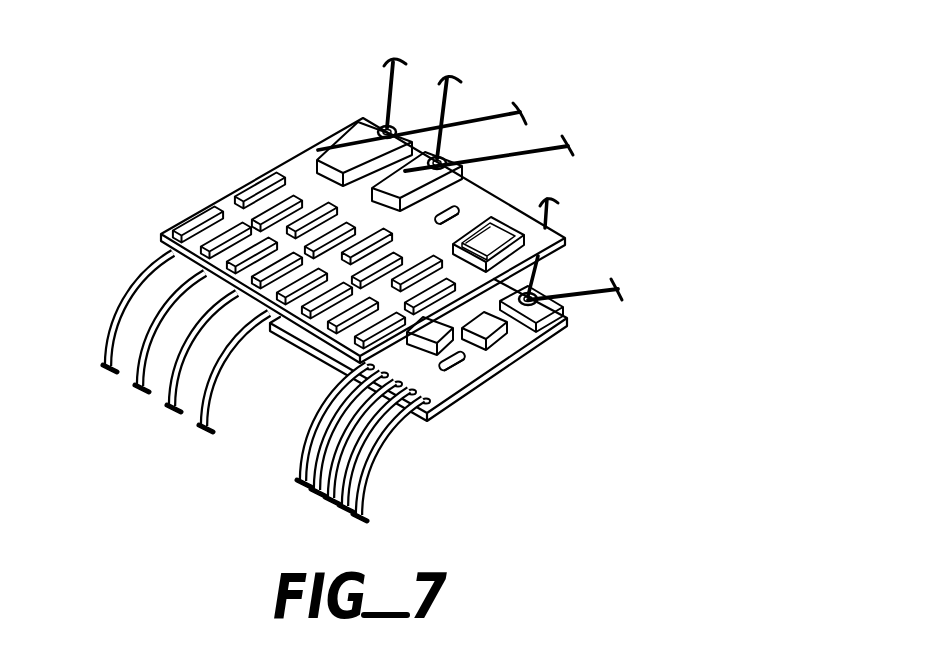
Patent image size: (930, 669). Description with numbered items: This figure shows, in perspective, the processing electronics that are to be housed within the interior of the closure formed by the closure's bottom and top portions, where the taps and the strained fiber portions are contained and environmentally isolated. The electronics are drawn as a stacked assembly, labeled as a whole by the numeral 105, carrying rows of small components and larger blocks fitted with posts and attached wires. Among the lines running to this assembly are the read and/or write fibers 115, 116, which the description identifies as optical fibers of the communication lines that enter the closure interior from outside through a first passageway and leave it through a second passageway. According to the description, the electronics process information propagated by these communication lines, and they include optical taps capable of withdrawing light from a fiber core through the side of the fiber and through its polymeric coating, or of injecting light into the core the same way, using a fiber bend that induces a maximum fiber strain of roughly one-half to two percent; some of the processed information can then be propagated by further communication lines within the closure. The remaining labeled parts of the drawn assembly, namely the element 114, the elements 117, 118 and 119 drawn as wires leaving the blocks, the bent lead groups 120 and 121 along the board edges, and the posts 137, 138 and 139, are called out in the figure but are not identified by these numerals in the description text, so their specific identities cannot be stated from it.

The electronic module assembly 105 is at (353, 265).
The first circuit board 114 is at (352, 124).
The read and/or write fiber 115 is at (318, 150).
The read and/or write fiber 116 is at (507, 330).
The lead wire 117 is at (500, 109).
The lead wire 118 is at (546, 148).
The lead wire 119 is at (614, 302).
The connector leads 120 is at (313, 433).
The connector leads 121 is at (130, 294).
The terminal pin 137 is at (380, 125).
The terminal pin 138 is at (433, 157).
The terminal pin 139 is at (540, 293).